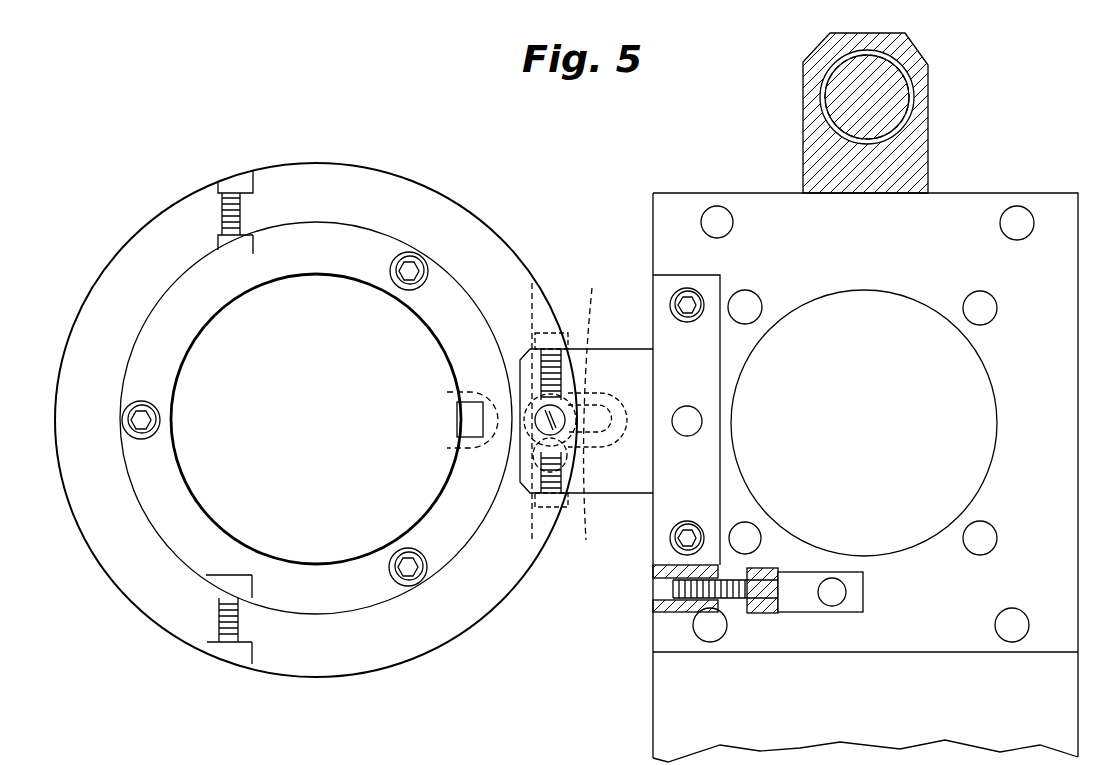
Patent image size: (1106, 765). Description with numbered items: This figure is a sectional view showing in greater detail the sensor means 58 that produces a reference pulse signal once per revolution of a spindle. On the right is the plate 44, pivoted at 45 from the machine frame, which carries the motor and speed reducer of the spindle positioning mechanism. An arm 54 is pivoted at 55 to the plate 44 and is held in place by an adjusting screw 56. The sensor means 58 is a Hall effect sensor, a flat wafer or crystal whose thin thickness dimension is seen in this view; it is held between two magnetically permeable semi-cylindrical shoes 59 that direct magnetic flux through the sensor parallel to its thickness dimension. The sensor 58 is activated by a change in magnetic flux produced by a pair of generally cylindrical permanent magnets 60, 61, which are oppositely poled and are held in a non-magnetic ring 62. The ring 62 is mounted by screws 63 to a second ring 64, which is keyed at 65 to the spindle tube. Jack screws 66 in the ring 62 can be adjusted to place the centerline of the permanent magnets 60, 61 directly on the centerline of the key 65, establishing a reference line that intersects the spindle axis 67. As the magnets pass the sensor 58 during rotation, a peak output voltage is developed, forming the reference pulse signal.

The plate 44 is at (775, 208).
The pivot 45 is at (903, 97).
The arm 54 is at (633, 323).
The pivot 55 is at (694, 407).
The adjusting screw 56 is at (675, 591).
The sensor means 58 is at (520, 407).
The semi-cylindrical shoes 59 is at (556, 412).
The permanent magnet 60 is at (587, 496).
The permanent magnet 61 is at (586, 340).
The non-magnetic ring 62 is at (477, 625).
The screws 63 is at (395, 284).
The second ring 64 is at (459, 496).
The key 65 is at (470, 400).
The jack screws 66 is at (224, 208).
The spindle axis 67 is at (320, 417).